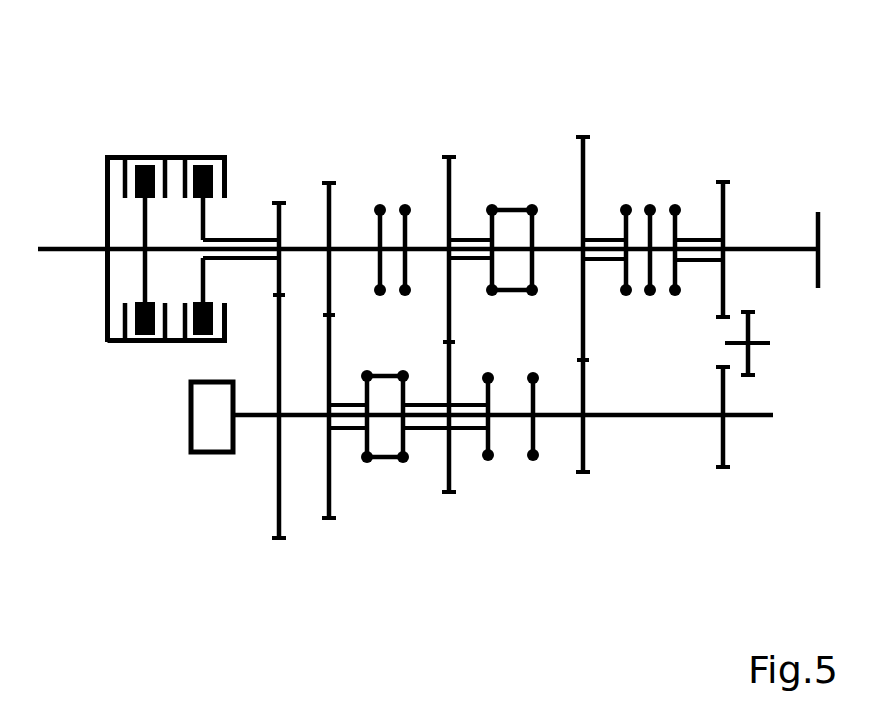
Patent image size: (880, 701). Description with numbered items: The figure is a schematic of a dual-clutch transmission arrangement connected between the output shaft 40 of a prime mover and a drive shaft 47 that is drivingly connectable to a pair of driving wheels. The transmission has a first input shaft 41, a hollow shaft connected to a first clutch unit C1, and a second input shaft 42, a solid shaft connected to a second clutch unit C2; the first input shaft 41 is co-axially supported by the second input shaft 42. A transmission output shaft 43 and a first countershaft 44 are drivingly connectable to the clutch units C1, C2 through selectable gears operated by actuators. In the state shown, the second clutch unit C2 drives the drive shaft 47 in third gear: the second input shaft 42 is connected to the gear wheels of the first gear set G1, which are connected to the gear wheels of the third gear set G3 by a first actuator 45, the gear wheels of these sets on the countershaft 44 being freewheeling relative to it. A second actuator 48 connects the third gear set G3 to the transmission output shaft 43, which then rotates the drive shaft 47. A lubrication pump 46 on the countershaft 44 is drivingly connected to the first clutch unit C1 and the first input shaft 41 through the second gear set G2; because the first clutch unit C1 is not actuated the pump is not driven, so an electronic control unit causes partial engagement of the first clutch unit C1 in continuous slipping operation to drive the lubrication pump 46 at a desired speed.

The output shaft of a prime mover 40 is at (75, 253).
The first input shaft 41 is at (243, 240).
The second input shaft 42 is at (182, 255).
The transmission output shaft 43 is at (552, 245).
The first countershaft 44 is at (653, 418).
The first actuator 45 is at (389, 476).
The lubrication pump 46 is at (201, 453).
The drive shaft 47 is at (795, 253).
The second actuator 48 is at (510, 197).
The first clutch unit C1 is at (198, 140).
The second clutch unit C2 is at (145, 140).
The first gear set G1 is at (326, 540).
The second gear set G2 is at (274, 558).
The third gear set G3 is at (452, 513).